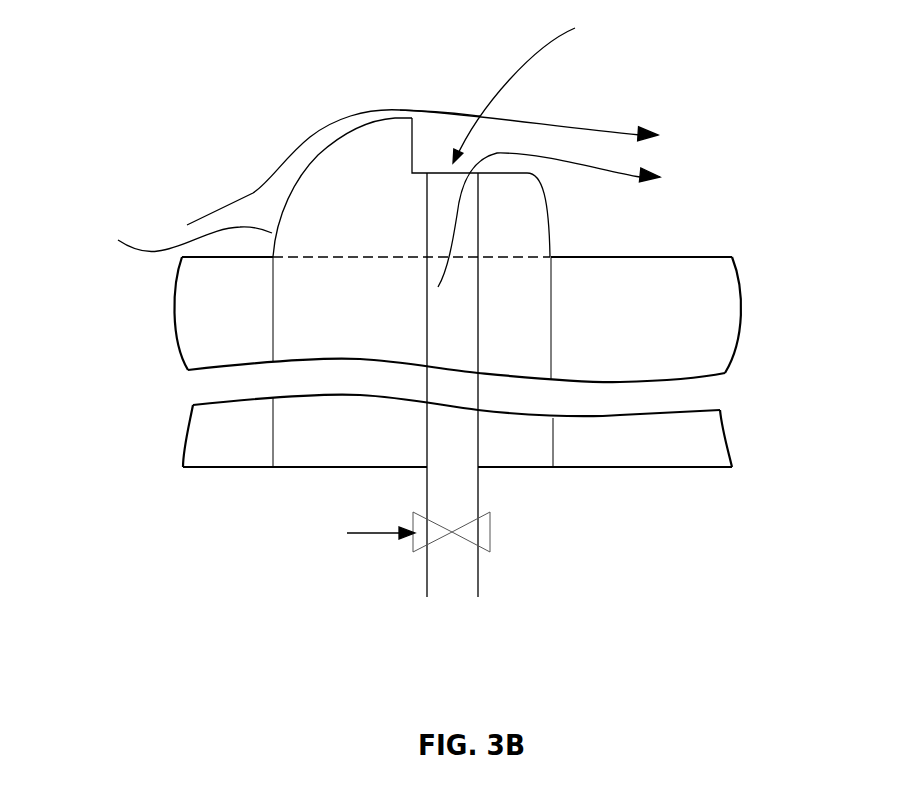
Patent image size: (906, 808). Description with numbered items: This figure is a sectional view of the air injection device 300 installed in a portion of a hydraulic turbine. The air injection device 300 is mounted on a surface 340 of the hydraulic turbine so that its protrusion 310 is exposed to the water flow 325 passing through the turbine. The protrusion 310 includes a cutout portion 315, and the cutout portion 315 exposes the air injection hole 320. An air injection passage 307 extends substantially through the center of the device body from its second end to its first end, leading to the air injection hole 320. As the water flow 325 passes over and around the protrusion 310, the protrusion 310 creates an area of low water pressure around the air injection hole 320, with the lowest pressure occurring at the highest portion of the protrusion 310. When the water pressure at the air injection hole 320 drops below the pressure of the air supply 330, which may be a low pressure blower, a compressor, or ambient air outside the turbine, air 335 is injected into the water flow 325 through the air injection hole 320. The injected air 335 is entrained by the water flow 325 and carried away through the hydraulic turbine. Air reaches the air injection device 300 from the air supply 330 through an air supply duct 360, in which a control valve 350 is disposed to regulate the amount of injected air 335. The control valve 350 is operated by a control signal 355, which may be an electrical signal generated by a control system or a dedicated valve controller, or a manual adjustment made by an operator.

The air injection device 300 is at (260, 127).
The air injection passage 307 is at (425, 328).
The protrusion 310 is at (167, 242).
The cutout portion 315 is at (432, 127).
The air injection hole 320 is at (537, 90).
The water flow 325 is at (580, 120).
The air supply 330 is at (451, 423).
The air 335 is at (617, 183).
The surface 340 is at (707, 255).
The control valve 350 is at (490, 548).
The control signal 355 is at (352, 548).
The air supply duct 360 is at (522, 399).